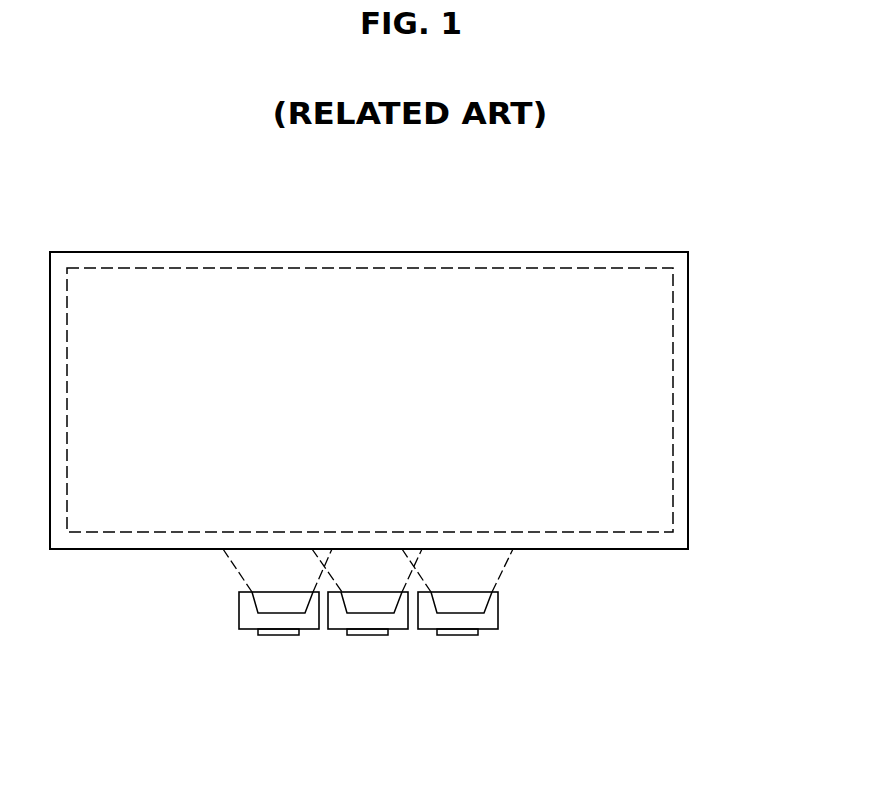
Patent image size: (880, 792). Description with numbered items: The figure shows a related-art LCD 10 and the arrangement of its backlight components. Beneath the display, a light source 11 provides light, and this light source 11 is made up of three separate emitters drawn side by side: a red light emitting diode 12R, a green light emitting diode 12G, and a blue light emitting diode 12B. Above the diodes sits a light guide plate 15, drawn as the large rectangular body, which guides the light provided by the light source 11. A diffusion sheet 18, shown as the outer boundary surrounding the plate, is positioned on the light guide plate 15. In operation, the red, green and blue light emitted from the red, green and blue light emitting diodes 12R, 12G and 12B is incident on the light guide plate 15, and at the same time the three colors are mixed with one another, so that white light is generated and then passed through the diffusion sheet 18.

The LCD 10 is at (142, 212).
The light source 11 is at (368, 648).
The red light emitting diode 12R is at (280, 622).
The green light emitting diode 12G is at (368, 622).
The blue light emitting diode 12B is at (457, 630).
The light guide plate 15 is at (564, 268).
The diffusion sheet 18 is at (688, 400).